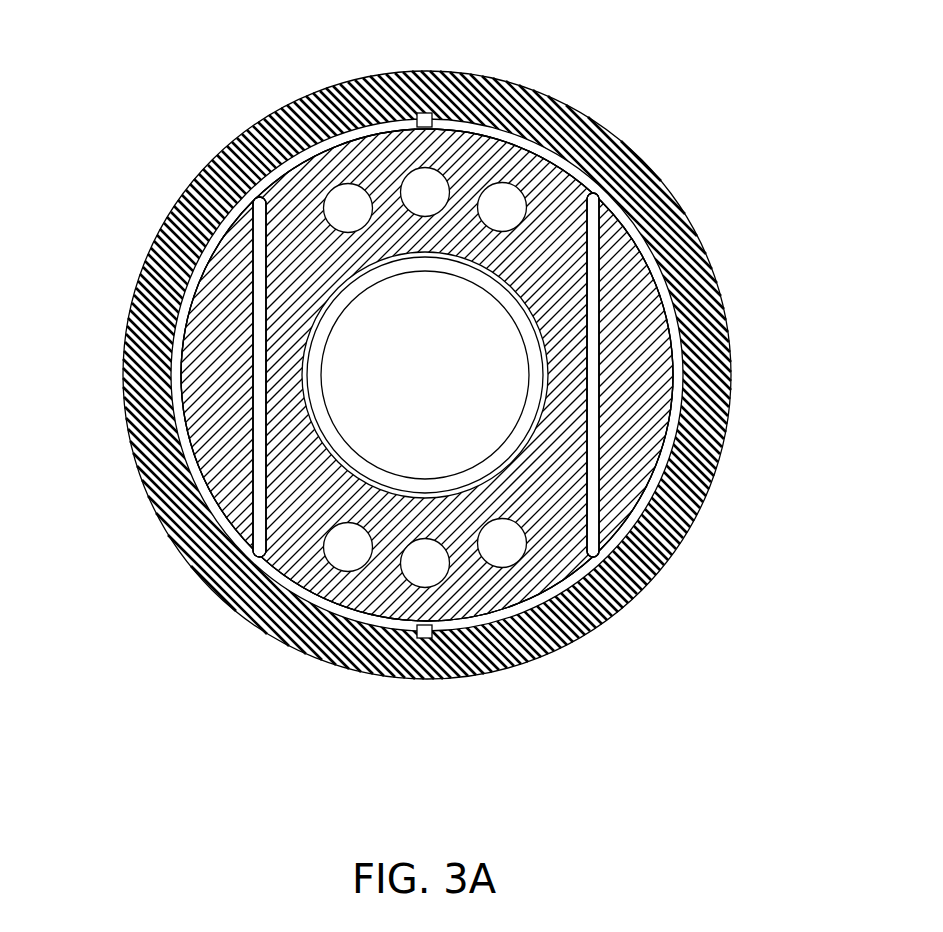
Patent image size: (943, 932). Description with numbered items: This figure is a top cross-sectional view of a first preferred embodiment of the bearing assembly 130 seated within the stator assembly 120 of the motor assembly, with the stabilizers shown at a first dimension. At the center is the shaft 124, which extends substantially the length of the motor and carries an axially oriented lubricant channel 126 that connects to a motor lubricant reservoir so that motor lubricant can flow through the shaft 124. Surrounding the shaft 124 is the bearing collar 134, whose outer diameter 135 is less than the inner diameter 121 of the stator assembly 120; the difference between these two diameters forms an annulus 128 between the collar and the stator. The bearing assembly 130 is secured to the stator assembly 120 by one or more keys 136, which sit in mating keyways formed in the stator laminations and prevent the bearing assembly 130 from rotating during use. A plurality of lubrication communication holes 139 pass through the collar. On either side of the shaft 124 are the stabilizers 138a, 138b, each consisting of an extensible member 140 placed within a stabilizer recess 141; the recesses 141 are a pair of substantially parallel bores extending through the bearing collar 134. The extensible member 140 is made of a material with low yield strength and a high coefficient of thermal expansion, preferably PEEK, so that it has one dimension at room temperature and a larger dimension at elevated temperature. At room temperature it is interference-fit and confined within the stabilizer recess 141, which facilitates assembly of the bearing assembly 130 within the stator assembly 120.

The stator assembly 120 is at (430, 384).
The inner diameter 121 is at (187, 482).
The shaft 124 is at (333, 307).
The lubricant channel 126 is at (513, 287).
The annulus 128 is at (212, 513).
The bearing assembly 130 is at (215, 283).
The bearing collar 134 is at (648, 458).
The outer diameter 135 is at (638, 243).
The key 136 is at (424, 113).
The stabilizer 138a is at (245, 323).
The stabilizer 138b is at (602, 348).
The lubrication communication holes 139 is at (348, 203).
The extensible member 140 is at (599, 214).
The stabilizer recess 141 is at (592, 237).